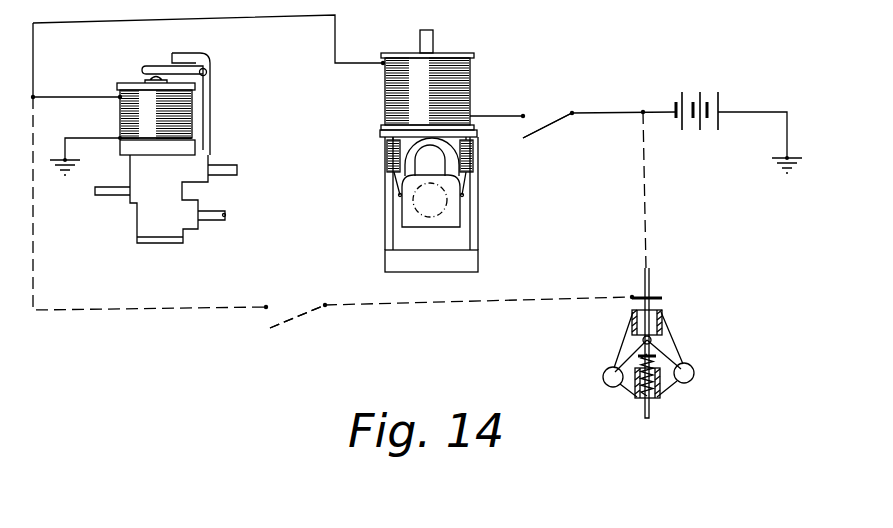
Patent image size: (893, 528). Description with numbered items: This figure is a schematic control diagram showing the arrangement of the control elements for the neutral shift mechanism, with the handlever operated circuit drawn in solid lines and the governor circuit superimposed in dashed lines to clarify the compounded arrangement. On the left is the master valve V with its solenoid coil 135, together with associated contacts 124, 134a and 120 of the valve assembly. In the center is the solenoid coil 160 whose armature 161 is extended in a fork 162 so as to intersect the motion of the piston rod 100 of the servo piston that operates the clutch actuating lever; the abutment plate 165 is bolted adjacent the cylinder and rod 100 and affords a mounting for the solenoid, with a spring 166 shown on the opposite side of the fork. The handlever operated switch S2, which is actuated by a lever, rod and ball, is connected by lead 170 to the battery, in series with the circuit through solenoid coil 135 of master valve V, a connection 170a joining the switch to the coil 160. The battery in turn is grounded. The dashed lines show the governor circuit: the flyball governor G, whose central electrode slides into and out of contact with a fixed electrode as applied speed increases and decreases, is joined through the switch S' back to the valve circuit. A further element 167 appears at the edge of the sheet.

The solenoid coil 135 is at (130, 108).
The contact 124 is at (105, 187).
The contact 134a is at (222, 167).
The contact 120 is at (220, 212).
The master valve V is at (137, 206).
The solenoid coil 160 is at (450, 95).
The armature 161 is at (434, 32).
The spring 166 is at (387, 160).
The abutment plate 165 is at (473, 186).
The fork 162 is at (400, 178).
The piston rod 100 is at (440, 216).
The conductor 170a is at (492, 115).
The lead 170 is at (630, 93).
The switch S2 is at (553, 125).
The switch S' is at (297, 311).
The flyball governor G is at (654, 343).
The element 167 is at (103, 527).